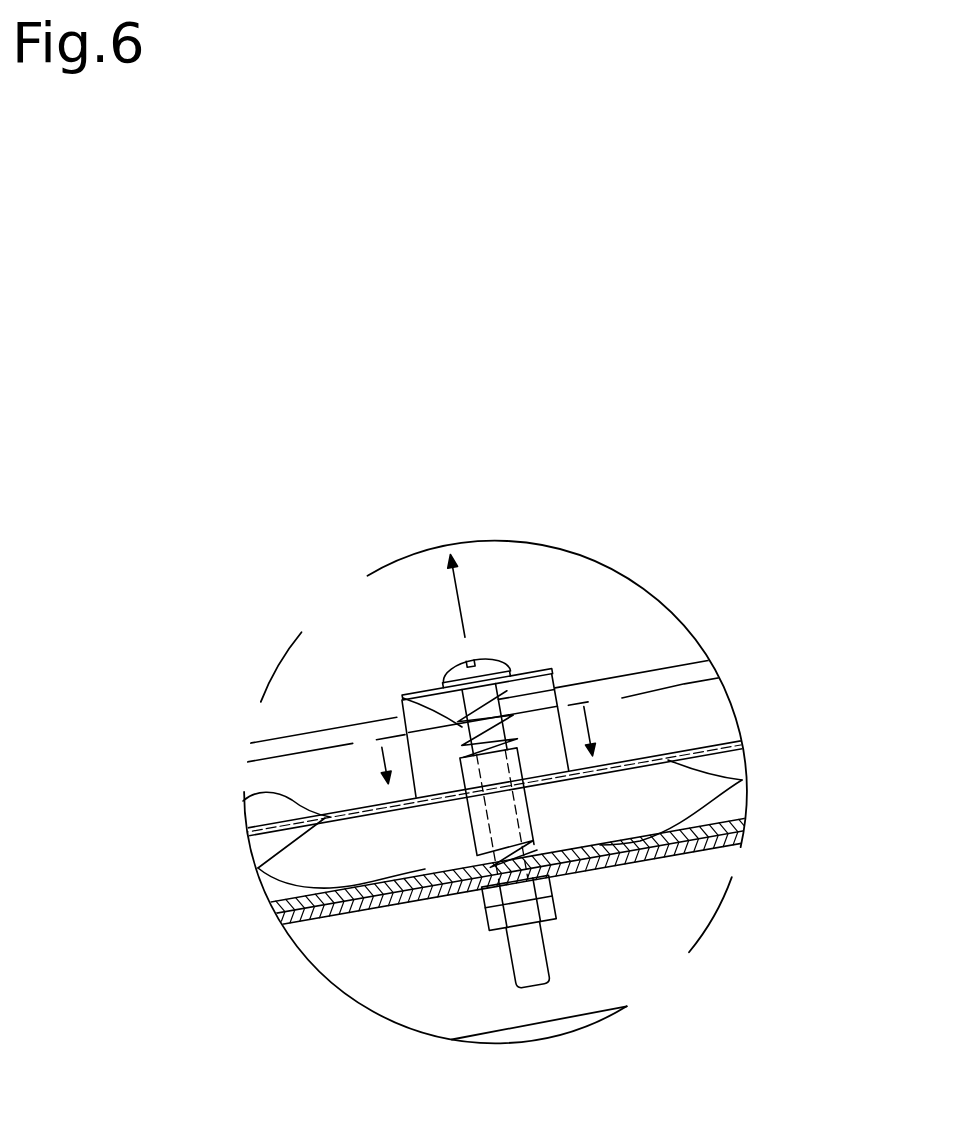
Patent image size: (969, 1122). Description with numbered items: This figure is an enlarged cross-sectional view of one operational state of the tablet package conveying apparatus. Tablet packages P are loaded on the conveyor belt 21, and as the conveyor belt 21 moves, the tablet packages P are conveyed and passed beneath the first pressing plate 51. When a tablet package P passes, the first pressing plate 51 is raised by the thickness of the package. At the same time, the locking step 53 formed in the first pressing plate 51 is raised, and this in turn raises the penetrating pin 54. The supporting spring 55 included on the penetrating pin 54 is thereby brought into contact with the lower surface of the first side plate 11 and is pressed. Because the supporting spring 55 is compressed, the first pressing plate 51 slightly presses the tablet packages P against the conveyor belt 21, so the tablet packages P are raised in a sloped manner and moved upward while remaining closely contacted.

The first side plate 11 is at (287, 737).
The conveyor belt 21 is at (745, 820).
The first pressing plate 51 is at (240, 798).
The locking step 53 is at (520, 670).
The penetrating pin 54 is at (578, 687).
The supporting spring 55 is at (400, 698).
The tablet package P is at (263, 893).